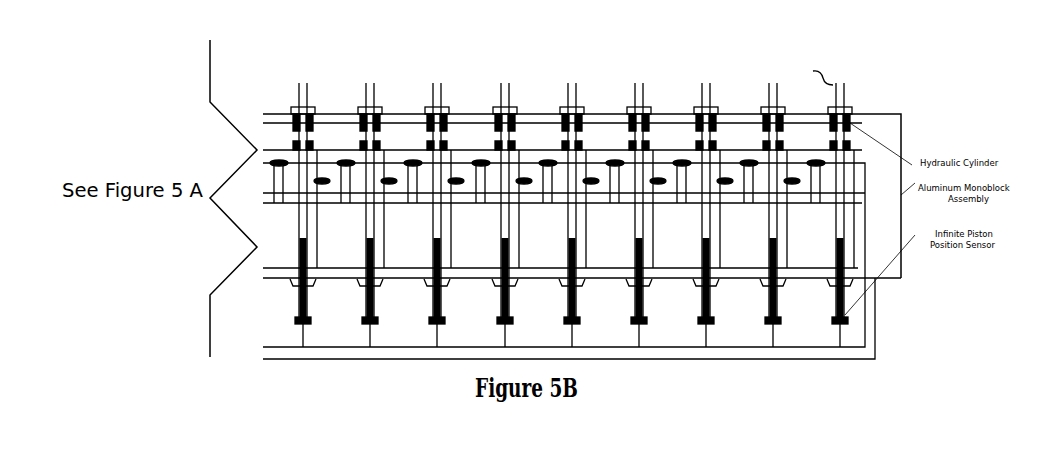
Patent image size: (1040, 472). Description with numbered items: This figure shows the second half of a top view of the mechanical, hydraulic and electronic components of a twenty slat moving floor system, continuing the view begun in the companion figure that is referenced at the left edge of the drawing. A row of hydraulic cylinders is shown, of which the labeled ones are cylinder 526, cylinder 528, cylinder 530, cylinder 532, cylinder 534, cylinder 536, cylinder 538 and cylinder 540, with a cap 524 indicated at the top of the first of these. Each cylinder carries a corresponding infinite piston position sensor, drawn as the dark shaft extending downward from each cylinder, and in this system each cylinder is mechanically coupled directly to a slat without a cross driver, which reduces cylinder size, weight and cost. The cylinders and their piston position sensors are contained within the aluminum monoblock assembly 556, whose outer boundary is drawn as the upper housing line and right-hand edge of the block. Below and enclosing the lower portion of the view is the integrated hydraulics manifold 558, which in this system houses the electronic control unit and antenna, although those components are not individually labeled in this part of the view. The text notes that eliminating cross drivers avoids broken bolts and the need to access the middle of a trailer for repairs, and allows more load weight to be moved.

The cylinder cap 524 is at (307, 98).
The hydraulic cylinder 526 is at (301, 204).
The hydraulic cylinder 528 is at (343, 71).
The hydraulic cylinder 530 is at (410, 71).
The hydraulic cylinder 532 is at (478, 71).
The hydraulic cylinder 534 is at (545, 71).
The hydraulic cylinder 536 is at (612, 71).
The hydraulic cylinder 538 is at (679, 71).
The hydraulic cylinder 540 is at (746, 71).
The monoblock assembly 556 is at (897, 128).
The integrated hydraulics manifold 558 is at (875, 326).